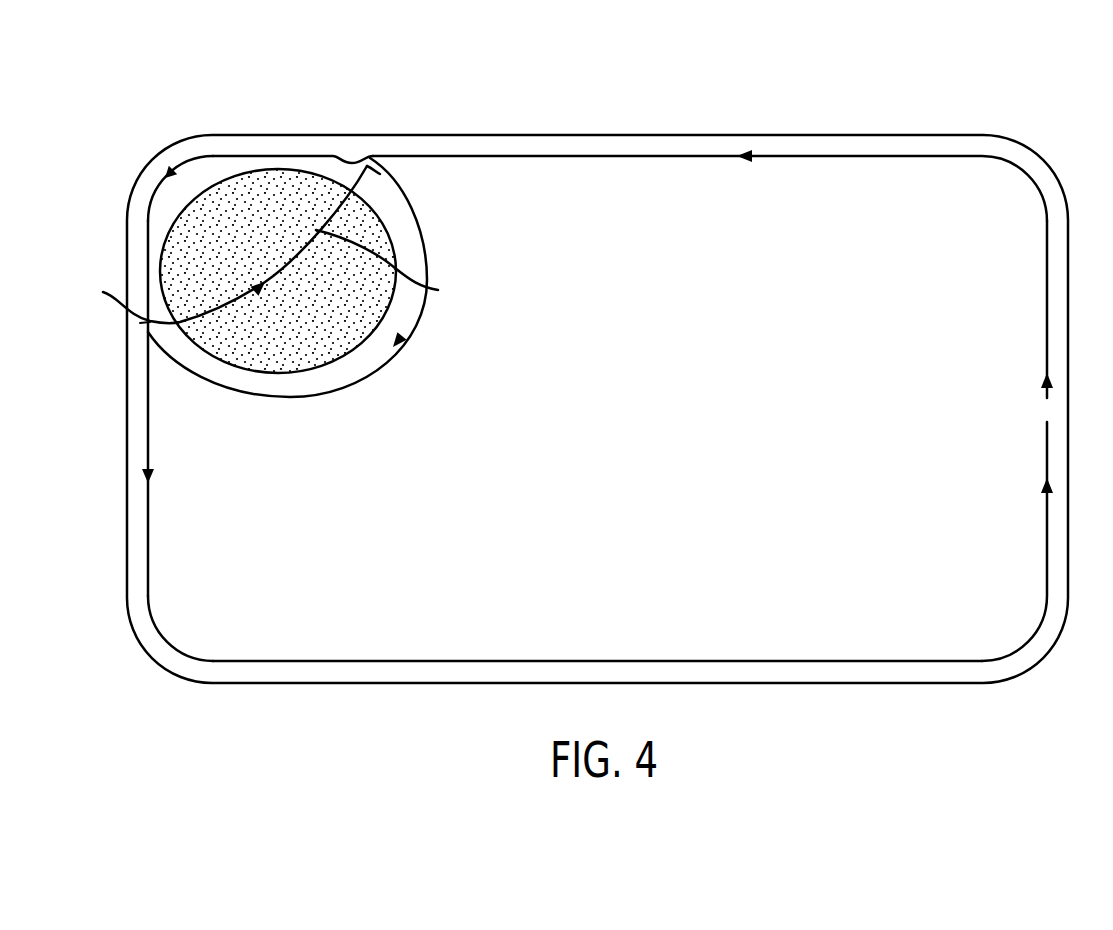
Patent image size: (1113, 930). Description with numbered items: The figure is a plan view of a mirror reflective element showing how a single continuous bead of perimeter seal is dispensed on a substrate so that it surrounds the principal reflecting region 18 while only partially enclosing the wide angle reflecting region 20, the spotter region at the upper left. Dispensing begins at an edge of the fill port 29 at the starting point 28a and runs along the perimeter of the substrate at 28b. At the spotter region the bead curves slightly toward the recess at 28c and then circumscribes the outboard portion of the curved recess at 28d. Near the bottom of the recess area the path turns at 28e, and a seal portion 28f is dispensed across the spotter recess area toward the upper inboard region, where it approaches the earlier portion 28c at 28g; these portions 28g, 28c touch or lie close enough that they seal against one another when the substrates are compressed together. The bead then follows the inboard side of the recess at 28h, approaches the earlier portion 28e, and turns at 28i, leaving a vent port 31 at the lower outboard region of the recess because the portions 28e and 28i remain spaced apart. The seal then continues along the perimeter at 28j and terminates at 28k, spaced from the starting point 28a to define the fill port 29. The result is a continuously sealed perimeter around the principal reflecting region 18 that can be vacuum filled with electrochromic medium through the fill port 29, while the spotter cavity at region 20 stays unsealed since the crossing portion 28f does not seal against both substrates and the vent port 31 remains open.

The wide angle reflecting region 20 is at (260, 99).
The principal reflecting region 18 is at (460, 645).
The seal starting point 28a is at (1047, 398).
The perimeter seal portion 28b is at (831, 156).
The seal portion curving toward spotter recess 28c is at (355, 158).
The outboard recess seal portion 28d is at (192, 160).
The seal turn portion 28e is at (217, 244).
The seal portion across spotter recess 28f is at (393, 267).
The upper inboard seal portion 28g is at (380, 174).
The inboard recess seal portion 28h is at (373, 368).
The seal turn portion at vent port 28i is at (143, 333).
The perimeter seal portion 28j is at (273, 660).
The seal terminating end 28k is at (1047, 422).
The fill port 29 is at (1050, 409).
The vent port 31 is at (140, 323).